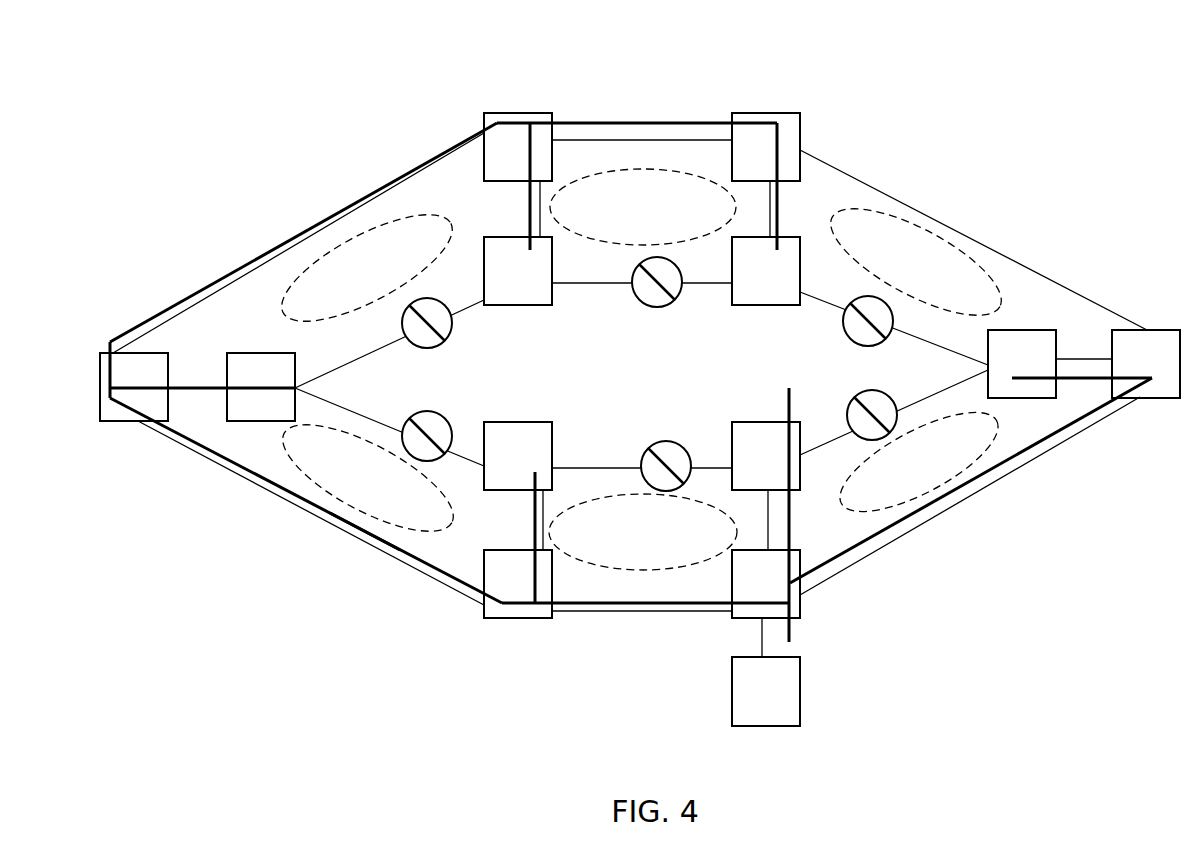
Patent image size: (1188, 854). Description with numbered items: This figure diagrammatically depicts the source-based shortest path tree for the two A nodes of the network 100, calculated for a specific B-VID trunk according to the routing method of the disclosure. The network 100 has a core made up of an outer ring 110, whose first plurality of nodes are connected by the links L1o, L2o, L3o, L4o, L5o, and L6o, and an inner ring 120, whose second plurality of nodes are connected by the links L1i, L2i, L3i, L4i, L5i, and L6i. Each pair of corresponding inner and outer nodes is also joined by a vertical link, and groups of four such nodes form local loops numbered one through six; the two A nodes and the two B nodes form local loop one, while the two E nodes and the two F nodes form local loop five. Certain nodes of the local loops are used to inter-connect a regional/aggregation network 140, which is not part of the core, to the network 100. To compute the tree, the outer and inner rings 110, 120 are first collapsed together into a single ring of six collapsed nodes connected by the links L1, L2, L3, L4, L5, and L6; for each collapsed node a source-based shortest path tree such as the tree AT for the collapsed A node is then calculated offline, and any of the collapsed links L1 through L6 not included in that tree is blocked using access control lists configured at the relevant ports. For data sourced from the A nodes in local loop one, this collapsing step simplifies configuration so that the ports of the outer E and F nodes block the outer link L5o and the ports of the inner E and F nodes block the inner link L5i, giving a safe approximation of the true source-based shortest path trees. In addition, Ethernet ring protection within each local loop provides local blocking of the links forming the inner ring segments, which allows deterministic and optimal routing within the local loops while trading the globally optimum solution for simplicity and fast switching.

The network 100 is at (622, 36).
The outer ring 110 is at (395, 182).
The inner ring 120 is at (705, 287).
The regional/aggregation network 140 is at (800, 690).
The link L1 is at (635, 568).
The link L2 is at (332, 495).
The link L3 is at (337, 243).
The link L4 is at (623, 172).
The link L5 is at (872, 213).
The link L6 is at (997, 430).
The link L1o is at (570, 610).
The link L2o is at (253, 473).
The link L3o is at (233, 280).
The link L4o is at (662, 140).
The link L5o is at (963, 233).
The link L6o is at (982, 472).
The link L1i is at (598, 467).
The link L2i is at (357, 410).
The link L3i is at (462, 305).
The link L4i is at (590, 285).
The link L5i is at (925, 337).
The link L6i is at (832, 435).
The source-based shortest path tree for node A AT is at (367, 532).